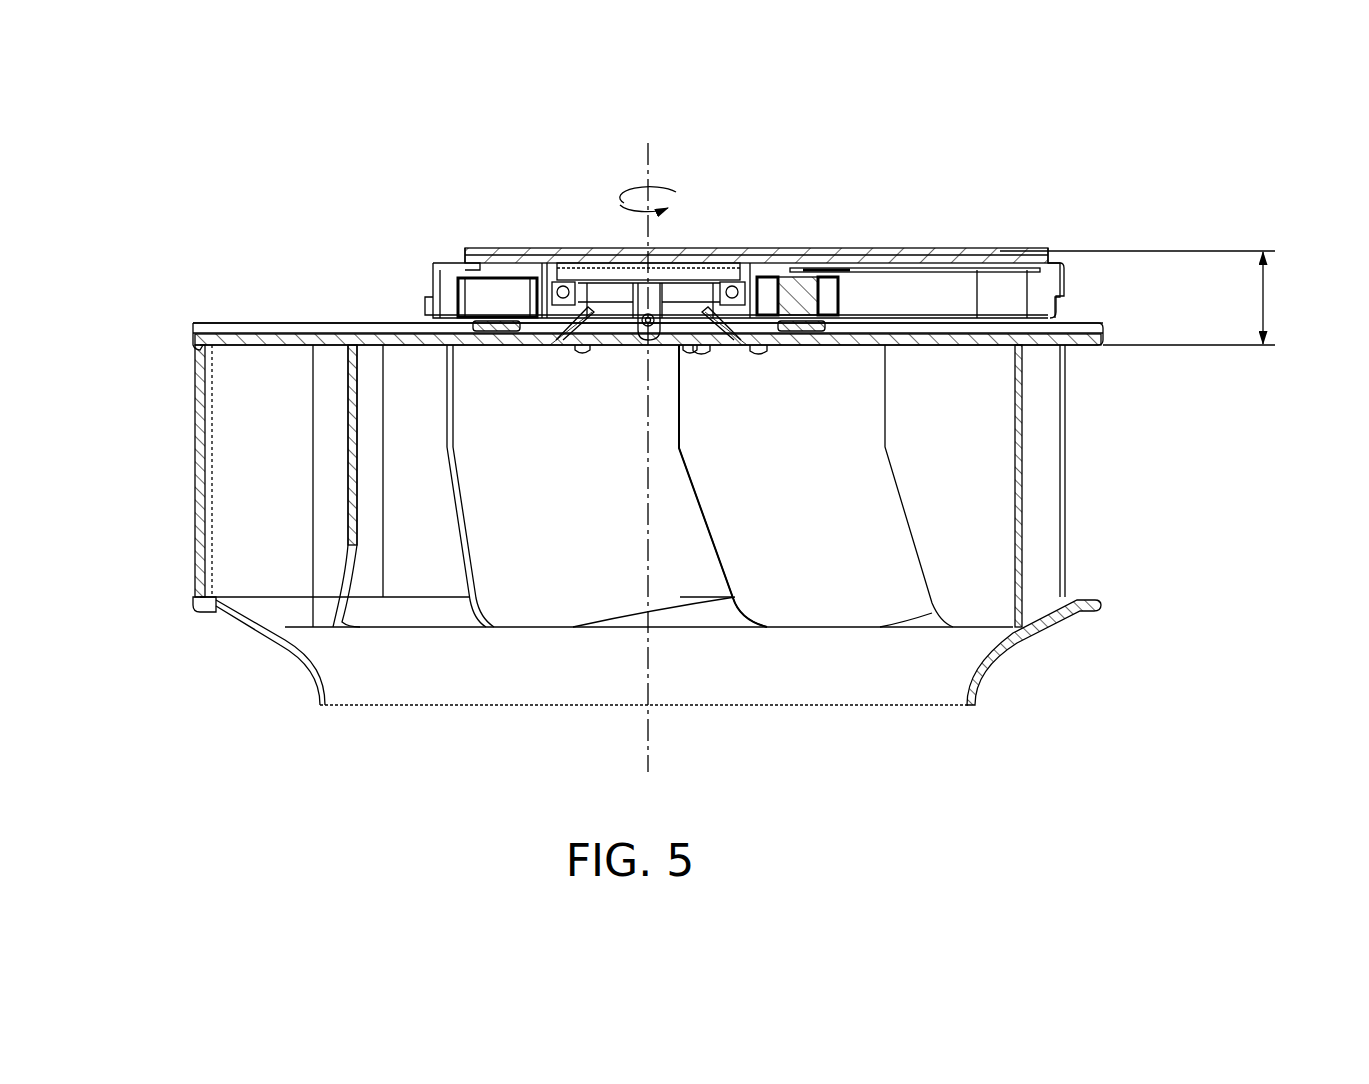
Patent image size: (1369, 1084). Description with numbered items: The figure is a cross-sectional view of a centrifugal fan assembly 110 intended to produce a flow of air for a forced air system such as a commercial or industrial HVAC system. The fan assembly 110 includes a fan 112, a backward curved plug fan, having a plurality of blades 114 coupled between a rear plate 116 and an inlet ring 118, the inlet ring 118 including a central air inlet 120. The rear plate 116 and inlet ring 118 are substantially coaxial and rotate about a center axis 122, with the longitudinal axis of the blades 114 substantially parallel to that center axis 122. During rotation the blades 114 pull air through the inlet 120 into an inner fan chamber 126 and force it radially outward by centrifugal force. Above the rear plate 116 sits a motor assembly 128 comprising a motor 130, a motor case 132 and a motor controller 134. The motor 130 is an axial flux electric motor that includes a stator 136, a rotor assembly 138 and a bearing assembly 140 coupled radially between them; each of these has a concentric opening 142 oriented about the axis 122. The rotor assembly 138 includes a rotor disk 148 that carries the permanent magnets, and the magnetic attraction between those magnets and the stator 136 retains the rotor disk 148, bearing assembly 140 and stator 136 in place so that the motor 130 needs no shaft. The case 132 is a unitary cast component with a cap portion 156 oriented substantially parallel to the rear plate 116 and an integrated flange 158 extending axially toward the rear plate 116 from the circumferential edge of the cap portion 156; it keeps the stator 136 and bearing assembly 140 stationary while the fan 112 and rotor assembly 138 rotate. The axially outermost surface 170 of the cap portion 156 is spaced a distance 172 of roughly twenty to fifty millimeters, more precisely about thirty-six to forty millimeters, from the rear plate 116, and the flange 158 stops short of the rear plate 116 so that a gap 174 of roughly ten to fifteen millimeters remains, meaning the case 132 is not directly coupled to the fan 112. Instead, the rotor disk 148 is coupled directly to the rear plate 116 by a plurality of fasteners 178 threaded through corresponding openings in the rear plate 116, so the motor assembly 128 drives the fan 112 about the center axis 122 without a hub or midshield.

The centrifugal fan assembly 110 is at (210, 256).
The fan 112 is at (182, 446).
The blades 114 is at (1040, 472).
The rear plate 116 is at (193, 325).
The inlet ring 118 is at (1040, 622).
The central air inlet 120 is at (441, 718).
The center axis 122 is at (651, 158).
The inner fan chamber 126 is at (811, 556).
The motor assembly 128 is at (777, 246).
The motor 130 is at (453, 275).
The motor case 132 is at (545, 248).
The motor controller 134 is at (1010, 268).
The stator 136 is at (880, 266).
The rotor assembly 138 is at (534, 350).
The bearing assembly 140 is at (726, 270).
The concentric opening 142 is at (617, 312).
The rotor disk 148 is at (503, 338).
The cap portion 156 is at (462, 265).
The integrated flange 158 is at (1053, 280).
The axially outermost surface 170 is at (822, 262).
The distance 172 is at (1263, 297).
The gap 174 is at (428, 320).
The fasteners 178 is at (757, 350).